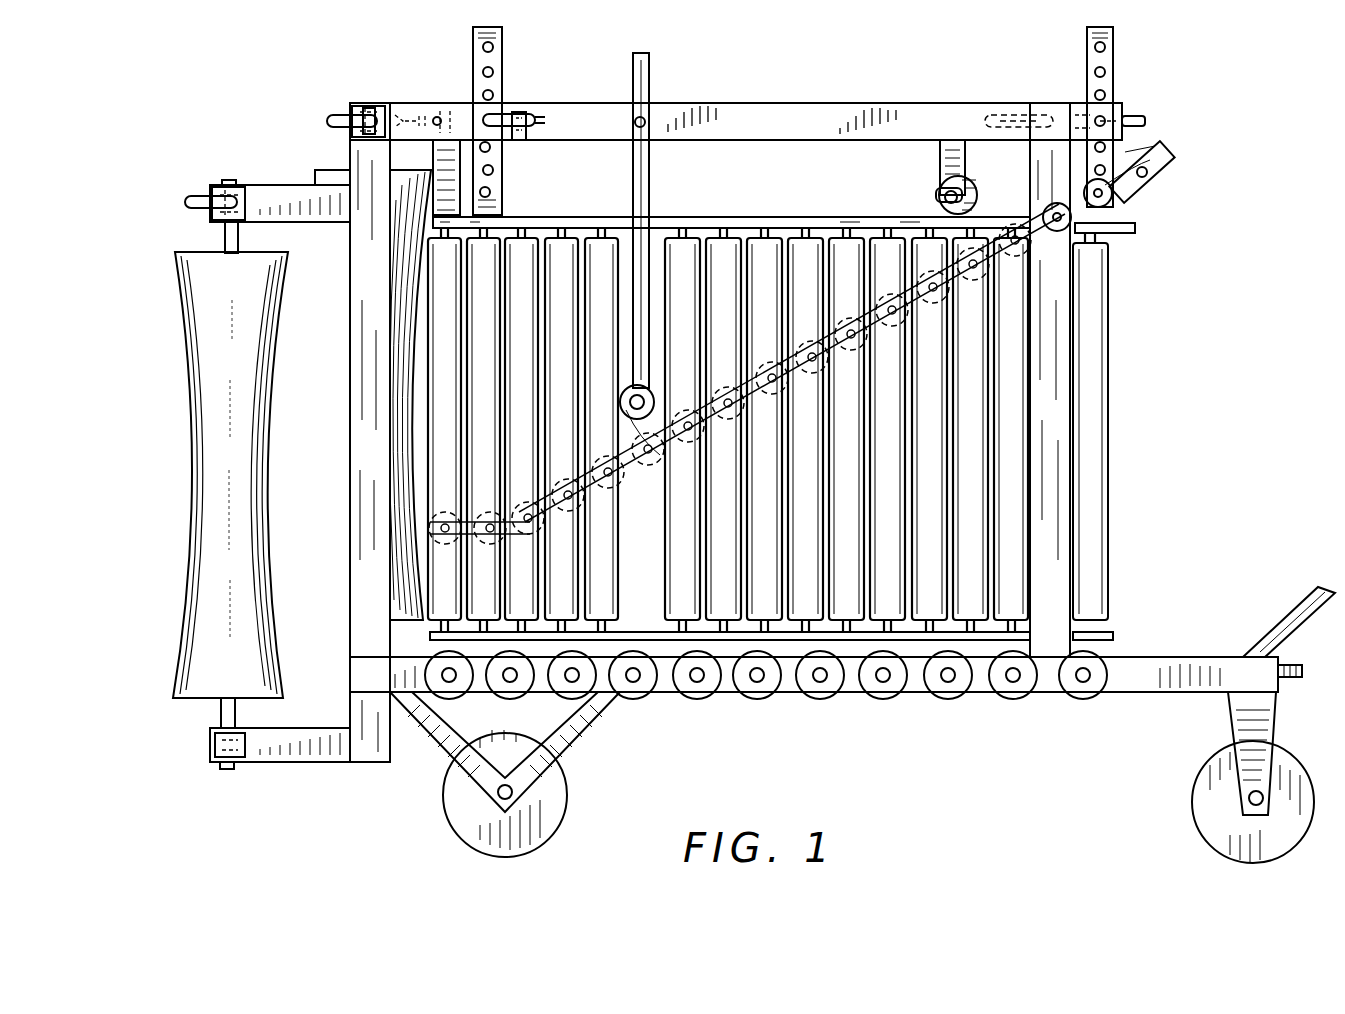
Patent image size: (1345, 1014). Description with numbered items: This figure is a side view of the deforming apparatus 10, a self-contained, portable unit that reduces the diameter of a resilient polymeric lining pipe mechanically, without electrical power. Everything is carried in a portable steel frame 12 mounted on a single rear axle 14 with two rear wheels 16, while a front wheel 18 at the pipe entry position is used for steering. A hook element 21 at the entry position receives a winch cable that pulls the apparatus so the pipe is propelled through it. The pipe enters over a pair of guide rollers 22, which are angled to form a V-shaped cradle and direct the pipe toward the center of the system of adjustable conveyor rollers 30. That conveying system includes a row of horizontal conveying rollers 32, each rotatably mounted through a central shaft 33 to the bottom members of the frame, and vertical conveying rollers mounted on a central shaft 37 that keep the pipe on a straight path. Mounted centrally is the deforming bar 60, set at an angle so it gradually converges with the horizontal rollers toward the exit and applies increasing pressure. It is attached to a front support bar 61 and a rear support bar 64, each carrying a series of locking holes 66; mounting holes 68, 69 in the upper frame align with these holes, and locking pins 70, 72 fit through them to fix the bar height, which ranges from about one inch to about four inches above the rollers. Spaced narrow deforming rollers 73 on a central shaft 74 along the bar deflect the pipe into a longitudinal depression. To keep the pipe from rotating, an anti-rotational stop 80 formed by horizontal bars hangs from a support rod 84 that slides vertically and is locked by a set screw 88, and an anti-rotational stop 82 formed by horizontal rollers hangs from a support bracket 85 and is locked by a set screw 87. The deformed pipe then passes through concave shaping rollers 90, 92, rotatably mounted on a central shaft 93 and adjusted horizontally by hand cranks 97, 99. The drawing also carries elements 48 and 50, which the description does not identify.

The deforming apparatus 10 is at (810, 100).
The portable steel frame 12 is at (893, 118).
The rear axle 14 is at (498, 790).
The rear wheels 16 is at (552, 796).
The front wheel 18 is at (1294, 770).
The hook element 21 is at (1296, 676).
The guide rollers 22 is at (1272, 628).
The system of adjustable conveyor rollers 30 is at (1130, 400).
The horizontal conveying rollers 32 is at (1010, 700).
The central shaft 33 is at (760, 703).
The central shaft 37 is at (1112, 244).
The clamp bracket 48 is at (428, 112).
The slot 50 is at (1020, 94).
The deforming bar 60 is at (1168, 150).
The front support bar 61 is at (1088, 42).
The rear support bar 64 is at (475, 46).
The locking holes 66 is at (492, 72).
The mounting hole 68 is at (496, 116).
The mounting hole 69 is at (1095, 112).
The locking pin 70 is at (543, 127).
The locking pin 72 is at (1140, 116).
The deforming rollers 73 is at (1134, 210).
The central shaft 74 is at (1158, 172).
The anti-rotational stop 80 is at (640, 454).
The anti-rotational stop 82 is at (964, 183).
The support rod 84 is at (649, 183).
The support bracket 85 is at (935, 135).
The set screw 87 is at (946, 190).
The set screw 88 is at (644, 118).
The shaping rollers 90 is at (332, 172).
The shaping rollers 92 is at (188, 300).
The central shaft 93 is at (222, 712).
The hand crank 97 is at (202, 186).
The hand crank 99 is at (340, 112).